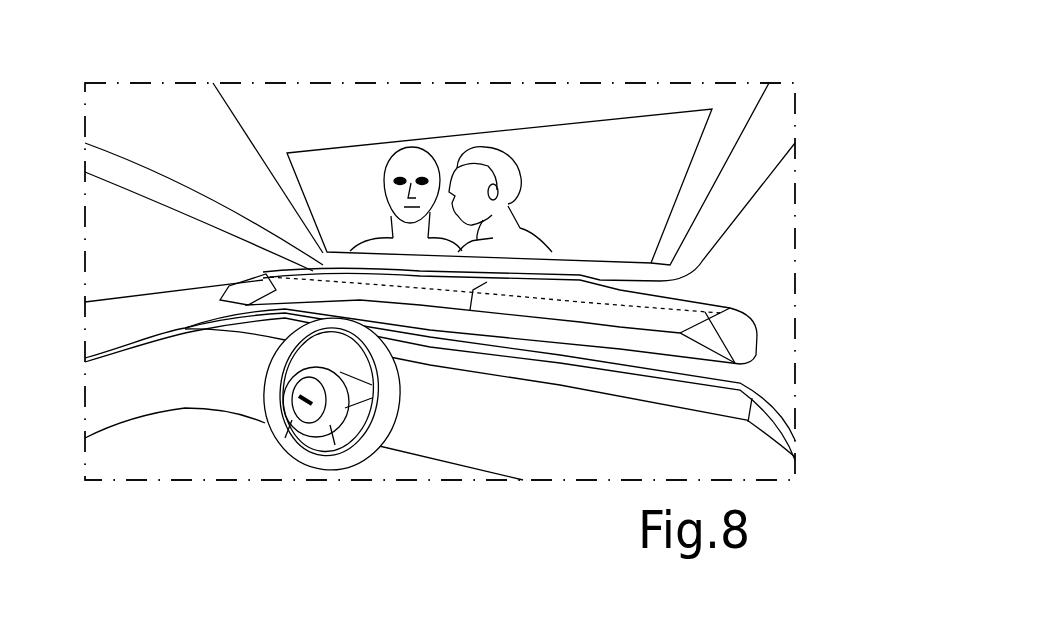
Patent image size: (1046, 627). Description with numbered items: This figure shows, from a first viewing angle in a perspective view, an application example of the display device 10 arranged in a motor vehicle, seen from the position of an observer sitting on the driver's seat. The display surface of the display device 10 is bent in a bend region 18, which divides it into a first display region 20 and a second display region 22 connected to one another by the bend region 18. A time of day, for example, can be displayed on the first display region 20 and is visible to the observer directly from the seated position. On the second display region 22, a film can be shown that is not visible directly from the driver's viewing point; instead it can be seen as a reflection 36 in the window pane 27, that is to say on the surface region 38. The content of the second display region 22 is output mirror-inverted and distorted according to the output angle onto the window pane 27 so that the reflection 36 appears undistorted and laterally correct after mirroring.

The display device 10 is at (706, 291).
The bend region 18 is at (586, 302).
The first display region 20 is at (533, 308).
The second display region 22 is at (530, 282).
The window pane 27 is at (647, 57).
The reflection 36 is at (589, 193).
The surface region 38 is at (440, 281).